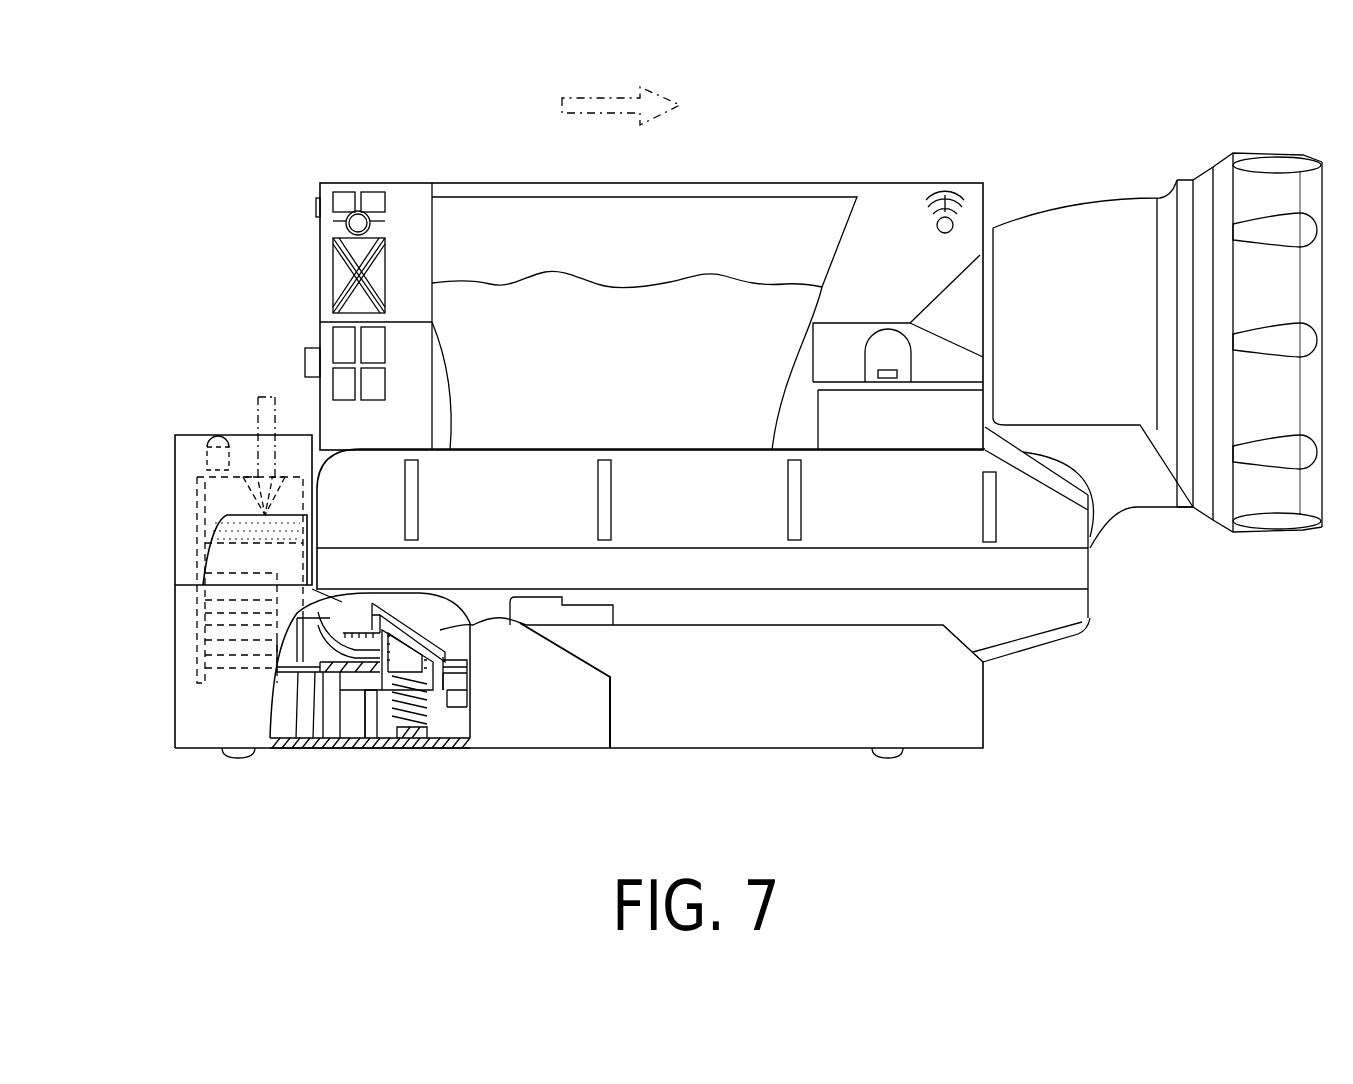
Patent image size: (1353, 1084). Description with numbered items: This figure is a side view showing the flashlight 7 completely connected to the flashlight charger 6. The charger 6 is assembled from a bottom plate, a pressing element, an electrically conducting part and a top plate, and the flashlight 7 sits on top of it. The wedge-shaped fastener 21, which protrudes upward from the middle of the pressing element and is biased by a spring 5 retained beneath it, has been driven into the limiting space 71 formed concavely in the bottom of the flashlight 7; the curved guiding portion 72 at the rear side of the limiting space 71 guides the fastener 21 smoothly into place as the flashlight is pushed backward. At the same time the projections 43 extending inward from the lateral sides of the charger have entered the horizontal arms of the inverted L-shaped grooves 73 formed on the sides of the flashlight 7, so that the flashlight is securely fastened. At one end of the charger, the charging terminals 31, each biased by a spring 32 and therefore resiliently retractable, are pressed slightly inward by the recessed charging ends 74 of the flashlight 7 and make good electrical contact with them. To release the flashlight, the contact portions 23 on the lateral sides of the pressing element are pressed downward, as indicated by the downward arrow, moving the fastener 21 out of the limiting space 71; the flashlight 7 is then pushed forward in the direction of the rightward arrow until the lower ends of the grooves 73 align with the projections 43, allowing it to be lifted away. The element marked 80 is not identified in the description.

The flashlight 7 is at (880, 210).
The charging terminals 31 is at (623, 496).
The charging ends 74 is at (700, 501).
The contact portions 23 is at (222, 572).
The spring 32 is at (238, 528).
The flashlight charger 6 is at (950, 708).
The projections 43 is at (603, 613).
The switch cover 80 is at (440, 711).
The curved guiding portion 72 is at (317, 635).
The wedge-shaped fastener 21 is at (425, 628).
The limiting space 71 is at (395, 650).
The inverted L-shaped grooves 73 is at (483, 625).
The spring 5 is at (372, 703).